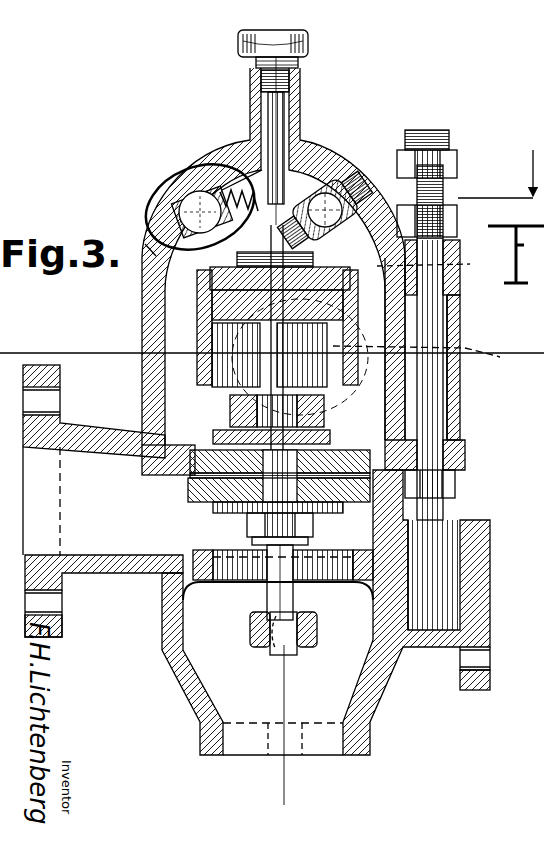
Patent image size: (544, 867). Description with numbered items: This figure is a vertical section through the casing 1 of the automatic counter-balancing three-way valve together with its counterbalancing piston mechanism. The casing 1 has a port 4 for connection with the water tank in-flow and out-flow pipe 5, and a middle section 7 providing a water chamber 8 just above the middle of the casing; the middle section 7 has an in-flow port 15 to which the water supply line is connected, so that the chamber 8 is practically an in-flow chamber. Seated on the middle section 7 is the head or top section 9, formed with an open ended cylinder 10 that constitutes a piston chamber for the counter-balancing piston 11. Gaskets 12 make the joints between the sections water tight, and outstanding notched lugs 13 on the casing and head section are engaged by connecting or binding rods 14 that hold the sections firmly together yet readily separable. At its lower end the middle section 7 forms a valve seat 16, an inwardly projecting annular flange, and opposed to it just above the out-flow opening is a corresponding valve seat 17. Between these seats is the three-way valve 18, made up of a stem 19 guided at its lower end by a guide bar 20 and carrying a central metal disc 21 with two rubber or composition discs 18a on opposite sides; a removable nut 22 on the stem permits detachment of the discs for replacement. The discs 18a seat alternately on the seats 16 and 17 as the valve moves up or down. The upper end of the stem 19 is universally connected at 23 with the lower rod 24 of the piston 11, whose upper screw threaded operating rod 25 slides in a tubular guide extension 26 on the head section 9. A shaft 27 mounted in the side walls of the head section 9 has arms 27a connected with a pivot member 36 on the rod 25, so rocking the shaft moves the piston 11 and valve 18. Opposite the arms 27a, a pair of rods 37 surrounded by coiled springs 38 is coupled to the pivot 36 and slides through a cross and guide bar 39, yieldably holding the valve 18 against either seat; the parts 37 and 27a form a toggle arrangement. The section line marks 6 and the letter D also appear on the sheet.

The casing 1 is at (162, 577).
The port 4 is at (310, 51).
The water tank in-flow and out-flow pipe 5 is at (118, 212).
The section line 6- 6 is at (12, 312).
The middle section 7 is at (402, 315).
The water chamber 8 is at (378, 383).
The head or top section 9 is at (322, 139).
The open ended cylinder 10 is at (380, 366).
The counter-balancing piston 11 is at (292, 342).
The gaskets 12 is at (470, 418).
The notched lugs 13 is at (455, 236).
The connecting or binding rods 14 is at (427, 329).
The in-flow port 15 is at (432, 360).
The valve seat 16 is at (190, 447).
The valve seat 17 is at (340, 545).
The three-way valve 18 is at (245, 507).
The rubber or composition discs 18a is at (198, 552).
The stem 19 is at (283, 587).
The guide bar 20 is at (303, 630).
The central metal disc 21 is at (190, 476).
The removable nut 22 is at (305, 541).
The universal connection 23 is at (240, 396).
The lower rod 24 is at (282, 345).
The upper screw threaded operating rod 25 is at (307, 128).
The tubular guide extension 26 is at (297, 113).
The shaft 27 is at (350, 175).
The arms 27a is at (325, 208).
The pivot member 36 is at (230, 147).
The rods 37 is at (185, 195).
The coiled springs 38 is at (220, 175).
The cross and guide bar 39 is at (150, 250).
The chamber D is at (128, 416).